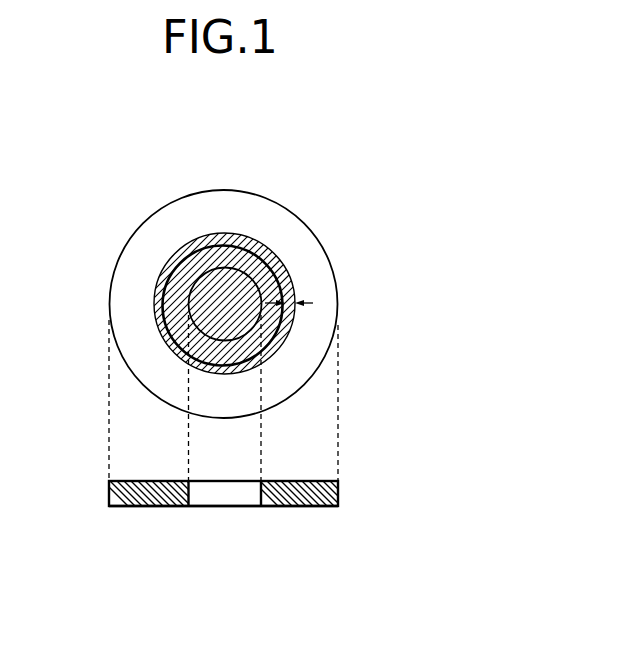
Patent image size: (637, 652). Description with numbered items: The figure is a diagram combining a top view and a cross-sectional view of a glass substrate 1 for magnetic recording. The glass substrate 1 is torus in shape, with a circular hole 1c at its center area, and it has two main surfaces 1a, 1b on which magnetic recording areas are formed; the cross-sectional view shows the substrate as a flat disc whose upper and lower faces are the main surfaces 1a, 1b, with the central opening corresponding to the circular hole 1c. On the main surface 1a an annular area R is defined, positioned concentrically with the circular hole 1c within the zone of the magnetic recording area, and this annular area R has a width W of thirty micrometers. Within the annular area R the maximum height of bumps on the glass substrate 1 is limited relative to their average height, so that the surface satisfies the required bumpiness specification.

The glass substrate 1 is at (349, 185).
The main surface 1a is at (313, 481).
The main surface 1b is at (310, 506).
The circular hole 1c is at (246, 259).
The annular area R is at (285, 267).
The width W is at (295, 320).